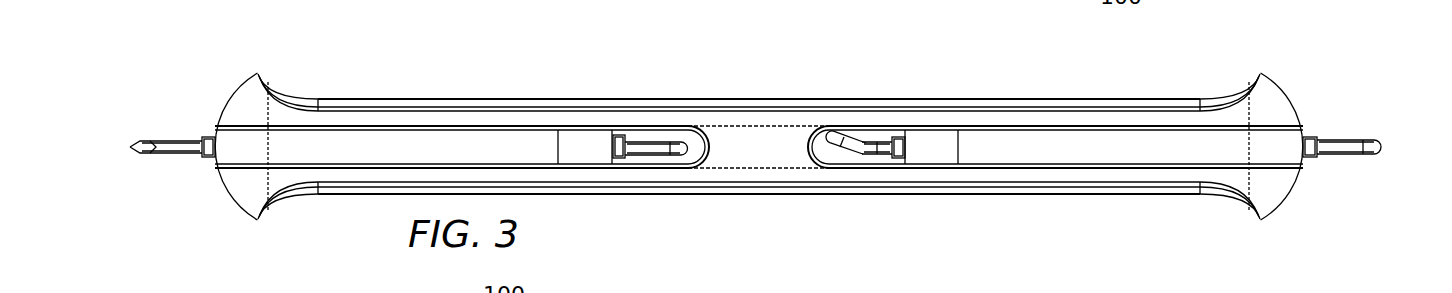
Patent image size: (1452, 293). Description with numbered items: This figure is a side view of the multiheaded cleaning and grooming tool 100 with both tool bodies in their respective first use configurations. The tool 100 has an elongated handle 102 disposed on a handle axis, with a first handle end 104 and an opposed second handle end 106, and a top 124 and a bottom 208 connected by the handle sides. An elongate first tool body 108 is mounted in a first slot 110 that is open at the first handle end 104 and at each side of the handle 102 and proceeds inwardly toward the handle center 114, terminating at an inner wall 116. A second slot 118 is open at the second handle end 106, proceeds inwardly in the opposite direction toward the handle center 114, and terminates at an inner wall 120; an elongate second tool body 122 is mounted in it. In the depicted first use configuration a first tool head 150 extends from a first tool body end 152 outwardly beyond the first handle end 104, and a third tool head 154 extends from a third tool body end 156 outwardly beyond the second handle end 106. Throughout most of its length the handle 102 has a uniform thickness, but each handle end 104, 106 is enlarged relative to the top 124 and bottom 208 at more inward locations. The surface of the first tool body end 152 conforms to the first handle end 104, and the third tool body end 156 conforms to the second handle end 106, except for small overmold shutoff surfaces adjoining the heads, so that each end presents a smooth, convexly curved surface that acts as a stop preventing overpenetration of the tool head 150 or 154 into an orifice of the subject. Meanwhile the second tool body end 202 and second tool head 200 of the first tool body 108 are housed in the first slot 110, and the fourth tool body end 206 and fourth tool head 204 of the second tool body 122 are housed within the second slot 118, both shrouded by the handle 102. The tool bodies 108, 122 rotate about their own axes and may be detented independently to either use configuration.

The multiheaded cleaning and grooming tool 100 is at (524, 73).
The elongated handle 102 is at (440, 100).
The first handle end 104 is at (222, 102).
The second handle end 106 is at (1293, 103).
The first tool body 108 is at (343, 143).
The first slot 110 is at (663, 162).
The handle center 114 is at (762, 100).
The inner wall 116 is at (692, 128).
The second slot 118 is at (872, 135).
The inner wall 120 is at (830, 155).
The second tool body 122 is at (1118, 138).
The handle top 124 is at (1038, 100).
The first tool head 150 is at (142, 142).
The first tool body end 152 is at (212, 160).
The third tool head 154 is at (1385, 148).
The third tool body end 156 is at (1306, 137).
The second tool head 200 is at (643, 147).
The second tool body end 202 is at (622, 128).
The fourth tool head 204 is at (875, 155).
The fourth tool body end 206 is at (900, 137).
The handle bottom 208 is at (1037, 196).